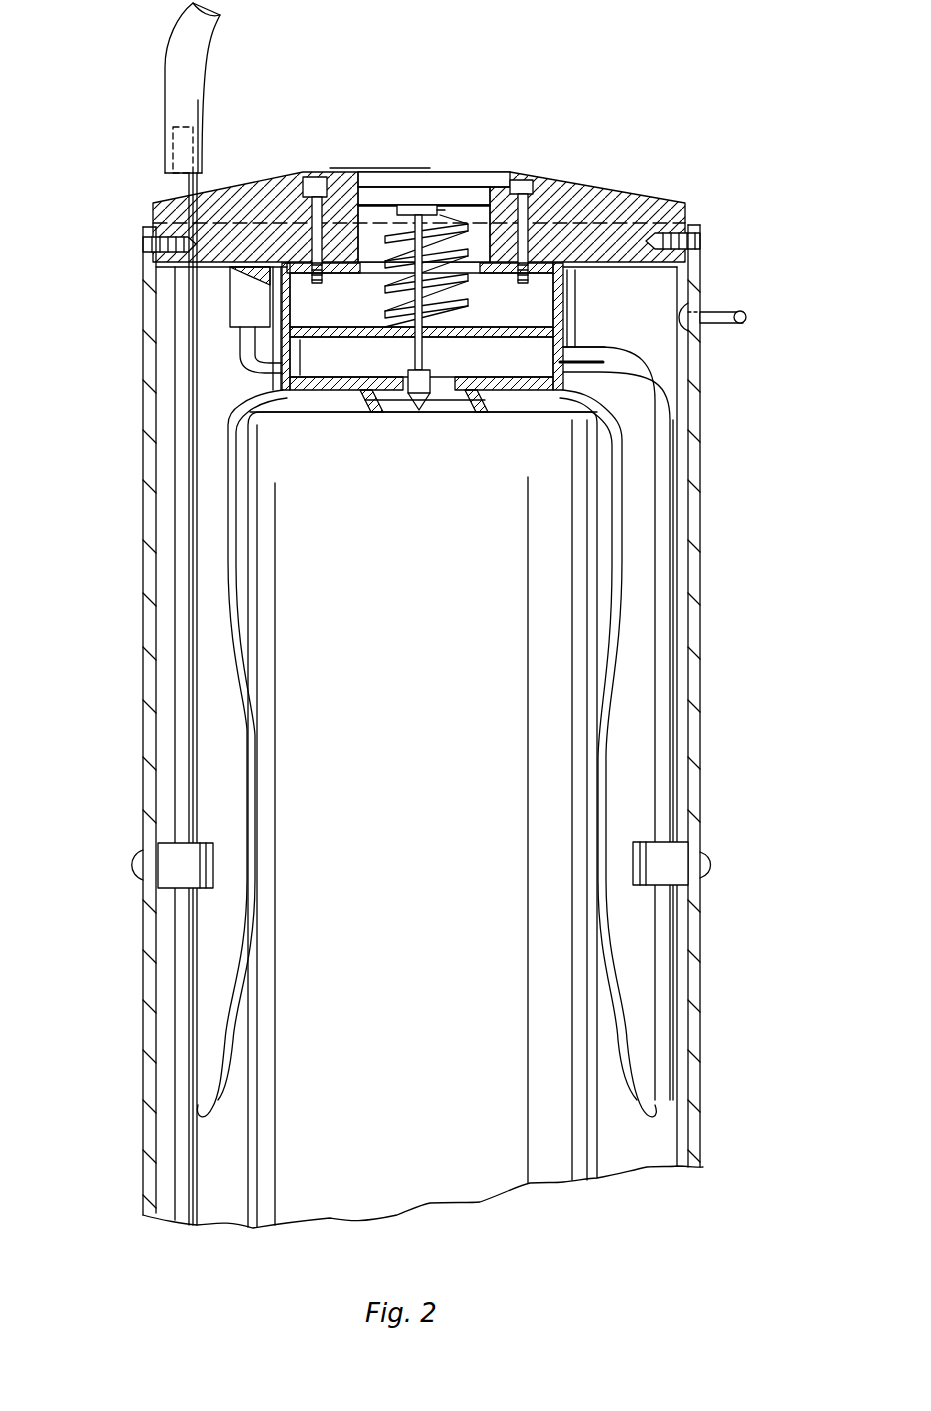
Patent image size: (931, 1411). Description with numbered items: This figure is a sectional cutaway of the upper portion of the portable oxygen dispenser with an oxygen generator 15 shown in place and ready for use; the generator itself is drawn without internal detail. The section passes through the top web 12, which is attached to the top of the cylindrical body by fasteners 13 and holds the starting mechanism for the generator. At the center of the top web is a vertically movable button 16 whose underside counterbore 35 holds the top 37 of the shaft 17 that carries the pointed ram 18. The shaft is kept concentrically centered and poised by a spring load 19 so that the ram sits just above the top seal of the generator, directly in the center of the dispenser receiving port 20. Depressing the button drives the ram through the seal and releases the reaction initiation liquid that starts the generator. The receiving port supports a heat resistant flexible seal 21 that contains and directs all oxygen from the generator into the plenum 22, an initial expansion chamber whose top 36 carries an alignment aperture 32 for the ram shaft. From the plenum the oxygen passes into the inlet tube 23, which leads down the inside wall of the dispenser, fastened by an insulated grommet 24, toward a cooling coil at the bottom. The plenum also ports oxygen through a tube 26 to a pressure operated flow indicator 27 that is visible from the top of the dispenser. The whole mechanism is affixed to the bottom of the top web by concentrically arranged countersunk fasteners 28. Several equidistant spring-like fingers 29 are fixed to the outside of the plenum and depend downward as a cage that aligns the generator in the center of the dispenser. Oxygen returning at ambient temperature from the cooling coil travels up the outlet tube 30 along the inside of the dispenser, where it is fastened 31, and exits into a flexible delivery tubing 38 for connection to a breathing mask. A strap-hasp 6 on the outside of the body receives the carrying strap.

The strap-hasp 6 is at (752, 318).
The top web 12 is at (648, 195).
The fasteners 13 is at (147, 240).
The oxygen generator 15 is at (557, 635).
The vertically movable button 16 is at (457, 182).
The shaft 17 is at (389, 252).
The pointed ram 18 is at (405, 372).
The spring load 19 is at (472, 316).
The dispenser receiving port 20 is at (400, 415).
The heat resistant flexible seal 21 is at (489, 402).
The plenum 22 is at (532, 352).
The inlet tube 23 is at (670, 360).
The insulated grommet 24 is at (678, 866).
The tube 26 is at (228, 360).
The pressure operated flow indicator 27 is at (228, 300).
The countersunk fasteners 28 is at (316, 176).
The spring-like fingers 29 is at (226, 505).
The outlet tube 30 is at (170, 1180).
The fastening 31 is at (178, 860).
The alignment aperture 32 is at (432, 340).
The counterbore 35 is at (417, 200).
The top of the plenum 36 is at (315, 342).
The top of the shaft 37 is at (443, 214).
The flexible delivery tubing 38 is at (163, 70).